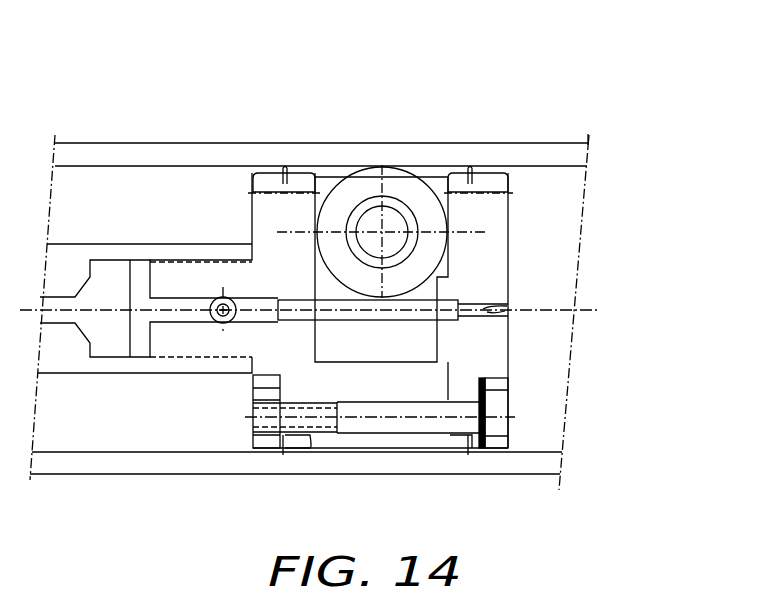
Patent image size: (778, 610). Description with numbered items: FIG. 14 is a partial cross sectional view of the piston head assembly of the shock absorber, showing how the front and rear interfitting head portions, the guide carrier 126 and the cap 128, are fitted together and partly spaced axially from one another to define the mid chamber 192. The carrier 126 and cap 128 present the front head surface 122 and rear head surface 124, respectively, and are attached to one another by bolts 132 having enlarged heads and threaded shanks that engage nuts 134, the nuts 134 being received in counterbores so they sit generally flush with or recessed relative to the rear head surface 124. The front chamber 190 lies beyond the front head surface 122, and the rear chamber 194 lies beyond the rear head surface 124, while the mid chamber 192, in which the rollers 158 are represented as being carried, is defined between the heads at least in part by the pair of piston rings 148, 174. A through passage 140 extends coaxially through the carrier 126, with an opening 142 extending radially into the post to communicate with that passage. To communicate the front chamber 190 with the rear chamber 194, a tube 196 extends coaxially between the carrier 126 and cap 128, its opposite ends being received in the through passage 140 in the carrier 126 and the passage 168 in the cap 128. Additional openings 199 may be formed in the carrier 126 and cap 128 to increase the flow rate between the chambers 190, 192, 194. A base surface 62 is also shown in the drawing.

The base surface 62 is at (517, 475).
The front head surface 122 is at (508, 353).
The rear head surface 124 is at (252, 243).
The guide carrier 126 is at (243, 378).
The cap 128 is at (542, 232).
The bolts 132 is at (508, 408).
The nuts 134 is at (250, 432).
The through passage 140 is at (177, 312).
The opening 142 is at (217, 321).
The piston ring 148 is at (285, 170).
The rollers 158 is at (348, 192).
The passage 168 is at (508, 307).
The piston ring 174 is at (470, 173).
The front chamber 190 is at (561, 186).
The mid chamber 192 is at (408, 353).
The rear chamber 194 is at (190, 183).
The tube 196 is at (363, 322).
The additional openings 199 is at (265, 192).